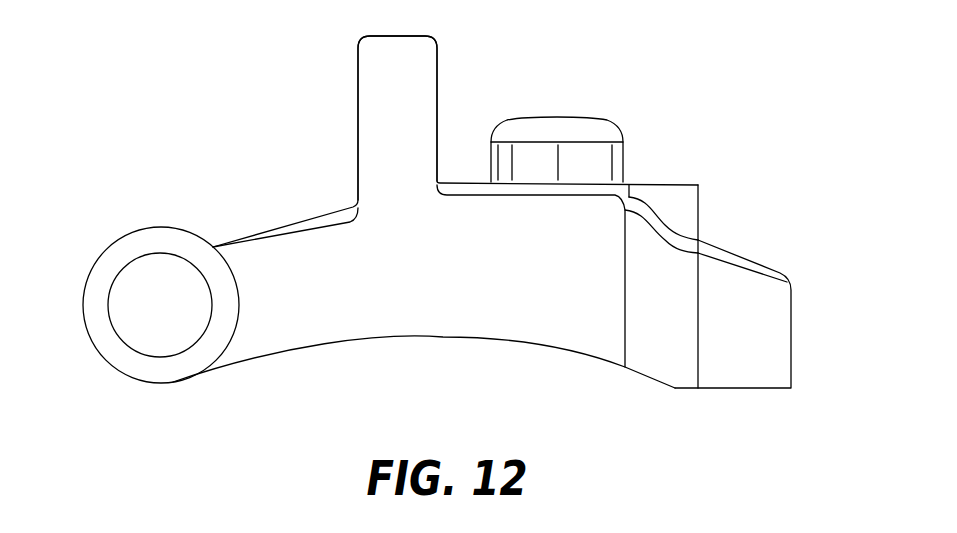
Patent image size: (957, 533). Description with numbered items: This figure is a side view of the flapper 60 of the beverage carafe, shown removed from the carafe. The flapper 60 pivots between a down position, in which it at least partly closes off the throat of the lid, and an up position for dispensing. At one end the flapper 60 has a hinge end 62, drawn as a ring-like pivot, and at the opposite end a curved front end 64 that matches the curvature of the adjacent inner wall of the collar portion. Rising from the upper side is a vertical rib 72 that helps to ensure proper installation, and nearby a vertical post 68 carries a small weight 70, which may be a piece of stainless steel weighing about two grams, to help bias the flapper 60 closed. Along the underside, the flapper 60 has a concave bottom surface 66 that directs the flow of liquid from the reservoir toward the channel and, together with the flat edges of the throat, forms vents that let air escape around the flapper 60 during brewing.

The flapper 60 is at (683, 62).
The hinge end 62 is at (147, 273).
The curved front end 64 is at (765, 335).
The concave bottom surface 66 is at (445, 346).
The vertical post 68 is at (584, 150).
The weight 70 is at (672, 197).
The vertical rib 72 is at (422, 58).